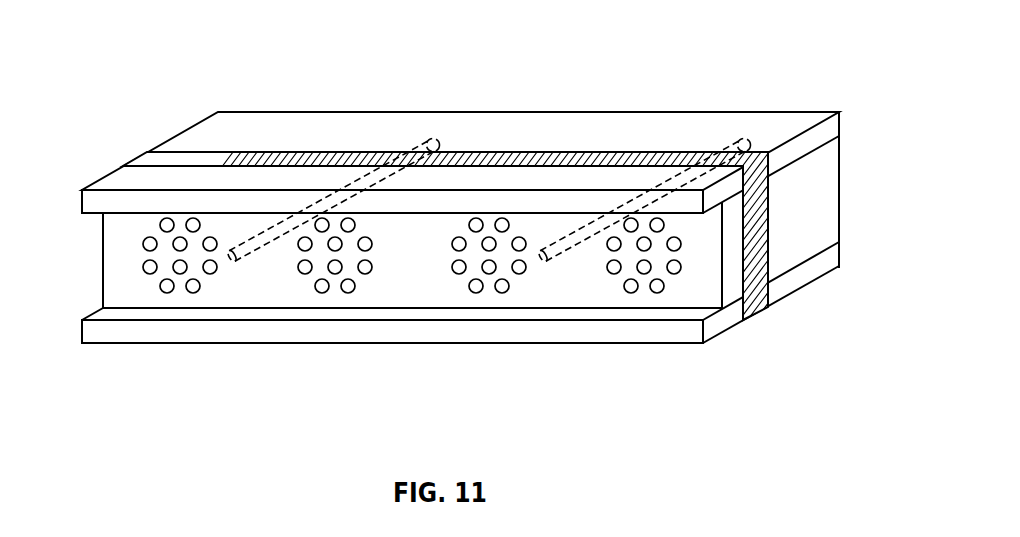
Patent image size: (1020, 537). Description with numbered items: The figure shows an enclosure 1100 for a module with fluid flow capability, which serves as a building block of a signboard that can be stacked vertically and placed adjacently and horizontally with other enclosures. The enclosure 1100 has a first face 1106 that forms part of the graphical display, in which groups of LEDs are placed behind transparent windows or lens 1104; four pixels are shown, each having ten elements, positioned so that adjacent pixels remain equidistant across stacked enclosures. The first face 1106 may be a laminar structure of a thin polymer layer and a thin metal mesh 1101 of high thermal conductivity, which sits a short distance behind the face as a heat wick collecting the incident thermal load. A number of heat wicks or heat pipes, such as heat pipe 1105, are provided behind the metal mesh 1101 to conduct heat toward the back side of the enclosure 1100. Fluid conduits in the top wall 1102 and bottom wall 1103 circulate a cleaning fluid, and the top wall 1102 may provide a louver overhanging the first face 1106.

The enclosure 1100 is at (138, 52).
The thin metal mesh 1101 is at (760, 265).
The top wall 1102 is at (805, 142).
The bottom wall 1103 is at (790, 283).
The transparent windows or lens 1104 is at (167, 293).
The heat pipe 1105 is at (398, 137).
The first face 1106 is at (117, 253).